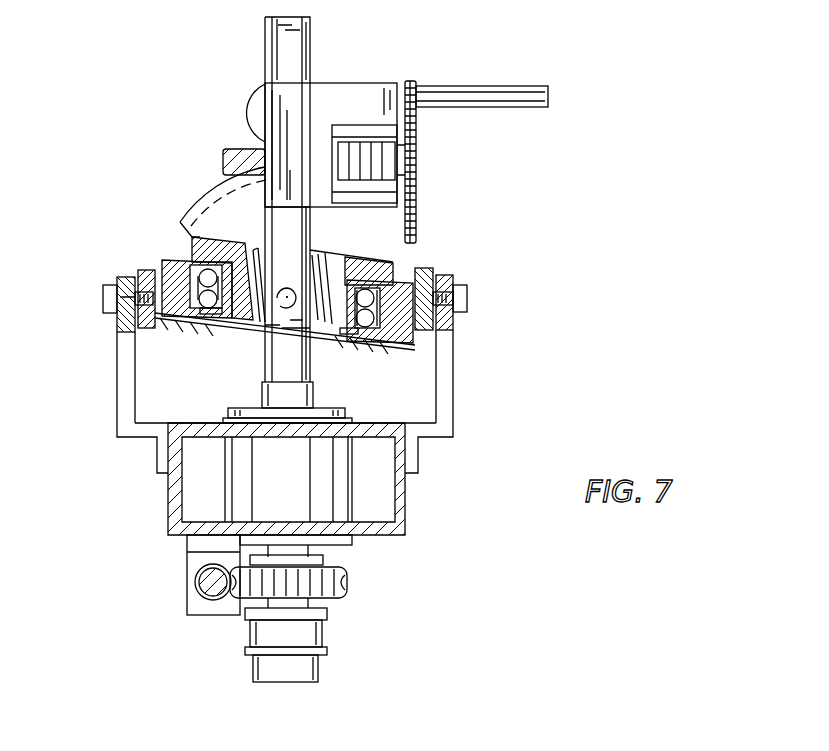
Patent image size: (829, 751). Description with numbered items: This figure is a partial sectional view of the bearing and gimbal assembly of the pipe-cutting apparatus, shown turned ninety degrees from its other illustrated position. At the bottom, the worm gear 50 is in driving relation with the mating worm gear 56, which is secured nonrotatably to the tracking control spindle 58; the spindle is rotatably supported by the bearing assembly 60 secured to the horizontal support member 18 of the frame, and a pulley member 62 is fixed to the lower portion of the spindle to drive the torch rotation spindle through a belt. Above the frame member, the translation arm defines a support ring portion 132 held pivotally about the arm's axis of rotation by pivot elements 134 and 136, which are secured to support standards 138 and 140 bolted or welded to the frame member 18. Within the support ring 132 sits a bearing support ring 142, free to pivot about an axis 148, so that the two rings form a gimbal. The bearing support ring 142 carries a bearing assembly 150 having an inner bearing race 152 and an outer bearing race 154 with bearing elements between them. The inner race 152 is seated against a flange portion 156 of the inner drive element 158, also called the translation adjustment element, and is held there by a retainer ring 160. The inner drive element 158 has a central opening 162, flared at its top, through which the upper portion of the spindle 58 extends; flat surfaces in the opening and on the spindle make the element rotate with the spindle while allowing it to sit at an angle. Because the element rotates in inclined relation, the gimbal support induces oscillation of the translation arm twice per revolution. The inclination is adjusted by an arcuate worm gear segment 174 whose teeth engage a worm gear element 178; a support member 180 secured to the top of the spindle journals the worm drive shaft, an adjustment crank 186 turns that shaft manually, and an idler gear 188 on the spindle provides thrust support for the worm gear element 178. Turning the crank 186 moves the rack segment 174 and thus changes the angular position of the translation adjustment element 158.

The horizontal support member 18 is at (168, 503).
The worm gear 50 is at (212, 582).
The mating worm gear 56 is at (343, 582).
The tracking control spindle 58 is at (313, 607).
The bearing assembly 60 is at (340, 497).
The pulley member 62 is at (310, 670).
The support ring portion 132 is at (436, 273).
The pivot element 134 is at (103, 298).
The pivot element 136 is at (467, 300).
The support standard 138 is at (120, 388).
The support standard 140 is at (448, 413).
The bearing support ring 142 is at (393, 345).
The axis 148 is at (283, 308).
The bearing assembly 150 is at (200, 320).
The inner bearing race 152 is at (197, 220).
The outer bearing race 154 is at (190, 273).
The flange portion 156 is at (395, 262).
The inner drive element 158 is at (230, 325).
The retainer ring 160 is at (350, 333).
The central opening 162 is at (312, 275).
The arcuate worm gear segment 174 is at (227, 202).
The worm gear element 178 is at (233, 150).
The support member 180 is at (360, 85).
The adjustment crank 186 is at (417, 205).
The idler gear 188 is at (257, 88).